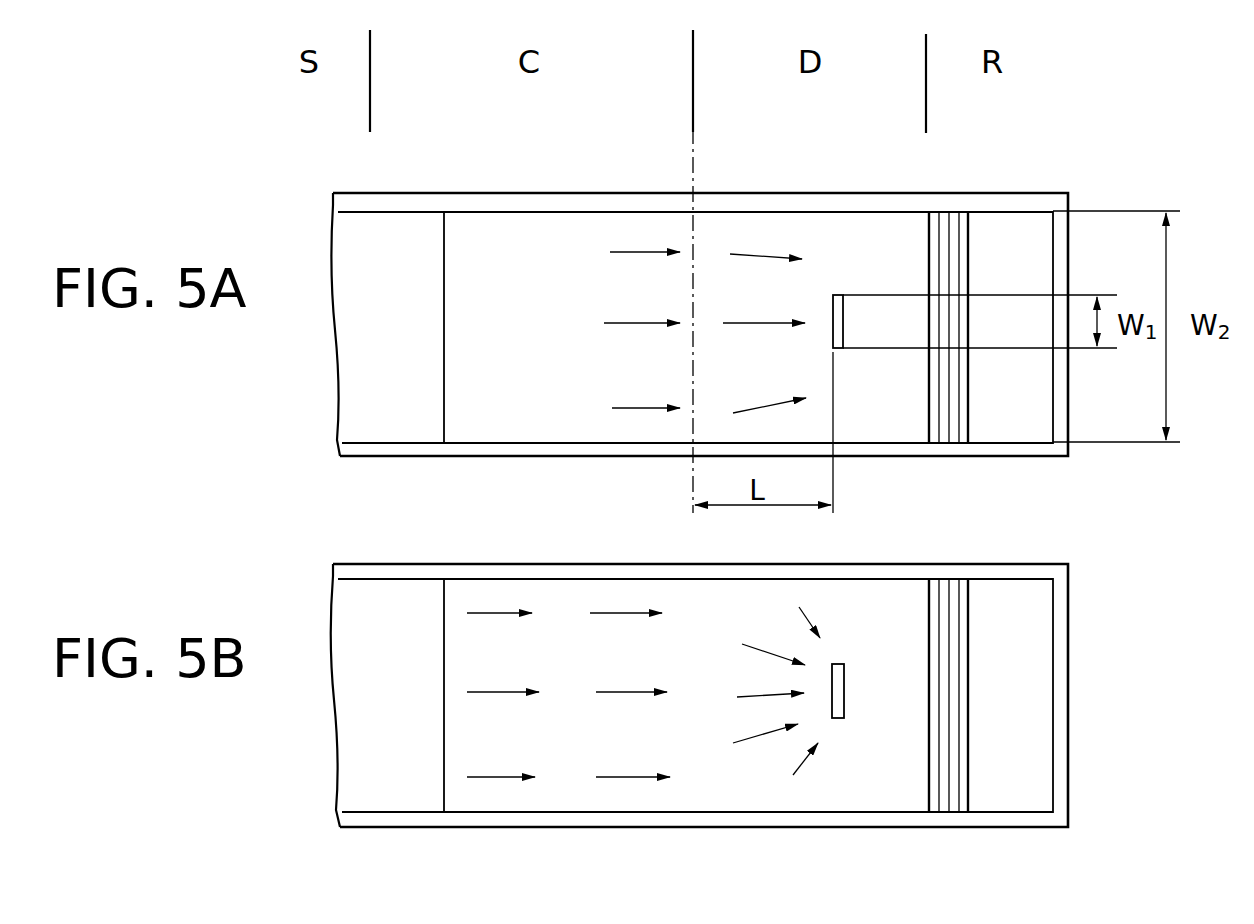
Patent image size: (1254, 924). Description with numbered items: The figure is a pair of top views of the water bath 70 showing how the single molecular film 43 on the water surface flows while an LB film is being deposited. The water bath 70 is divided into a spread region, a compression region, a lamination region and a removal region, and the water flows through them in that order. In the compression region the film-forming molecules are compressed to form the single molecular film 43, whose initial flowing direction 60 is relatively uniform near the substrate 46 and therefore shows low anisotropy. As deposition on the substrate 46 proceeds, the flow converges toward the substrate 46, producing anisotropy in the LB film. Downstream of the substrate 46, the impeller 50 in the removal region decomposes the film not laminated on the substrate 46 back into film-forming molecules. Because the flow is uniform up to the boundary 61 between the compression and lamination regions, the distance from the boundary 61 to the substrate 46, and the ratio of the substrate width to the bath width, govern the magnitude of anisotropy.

In FIG. 5A, the single molecular film 43 is at (575, 387).
In FIG. 5A, the substrate 46 is at (840, 350).
In FIG. 5B, the substrate 46 is at (838, 720).
In FIG. 5A, the impeller 50 is at (953, 437).
In FIG. 5B, the impeller 50 is at (955, 805).
In FIG. 5A, the initial flowing direction 60 is at (505, 405).
In FIG. 5A, the boundary 61 is at (698, 190).
In FIG. 5A, the water bath 70 is at (1045, 192).
In FIG. 5B, the water bath 70 is at (1046, 563).